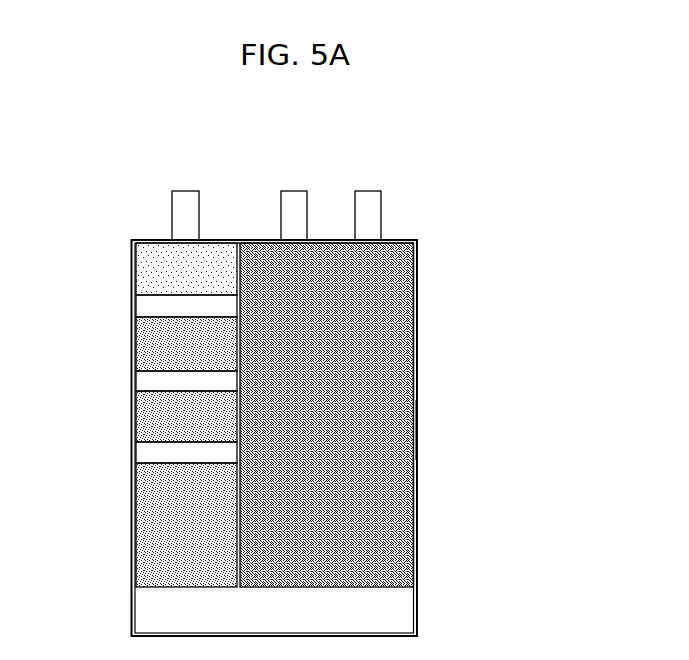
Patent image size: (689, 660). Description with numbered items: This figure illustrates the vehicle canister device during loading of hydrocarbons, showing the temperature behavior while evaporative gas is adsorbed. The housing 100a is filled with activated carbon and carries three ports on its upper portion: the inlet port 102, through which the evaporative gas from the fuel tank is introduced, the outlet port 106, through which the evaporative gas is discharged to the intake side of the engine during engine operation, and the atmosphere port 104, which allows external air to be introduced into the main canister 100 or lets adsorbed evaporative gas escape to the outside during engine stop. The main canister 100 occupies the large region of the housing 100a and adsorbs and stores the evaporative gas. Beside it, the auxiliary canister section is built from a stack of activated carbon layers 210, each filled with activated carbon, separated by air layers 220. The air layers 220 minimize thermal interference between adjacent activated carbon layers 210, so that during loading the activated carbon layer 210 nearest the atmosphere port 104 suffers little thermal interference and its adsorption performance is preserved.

The main canister 100 is at (416, 240).
The housing 100a is at (417, 430).
The inlet port 102 is at (370, 191).
The atmosphere port 104 is at (188, 191).
The outlet port 106 is at (293, 191).
The activated carbon layer 210 is at (153, 270).
The air layer 220 is at (153, 307).